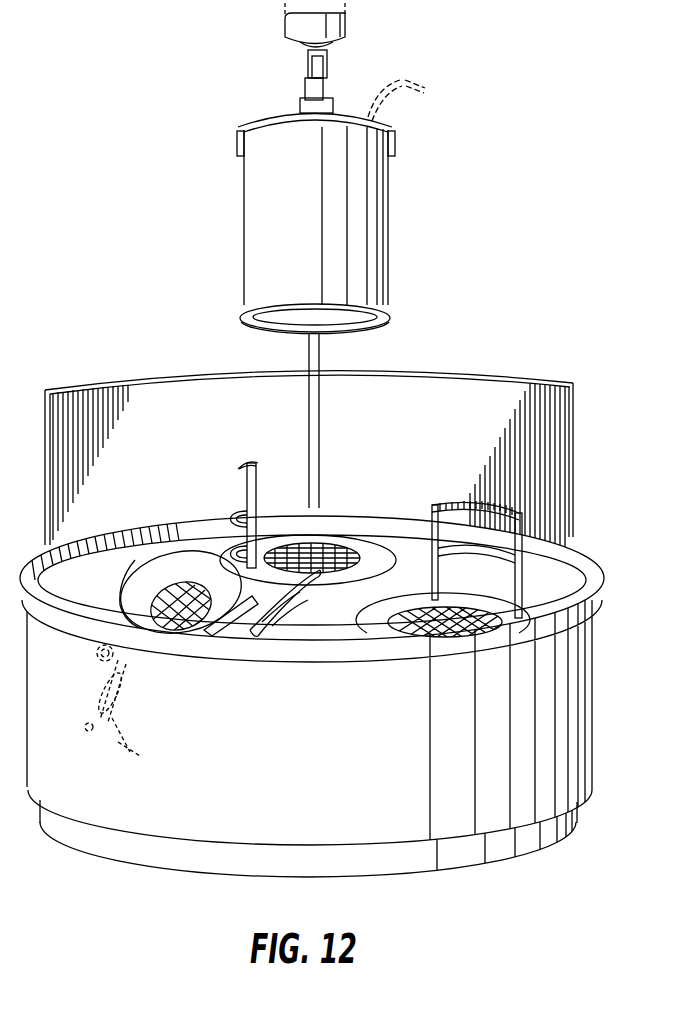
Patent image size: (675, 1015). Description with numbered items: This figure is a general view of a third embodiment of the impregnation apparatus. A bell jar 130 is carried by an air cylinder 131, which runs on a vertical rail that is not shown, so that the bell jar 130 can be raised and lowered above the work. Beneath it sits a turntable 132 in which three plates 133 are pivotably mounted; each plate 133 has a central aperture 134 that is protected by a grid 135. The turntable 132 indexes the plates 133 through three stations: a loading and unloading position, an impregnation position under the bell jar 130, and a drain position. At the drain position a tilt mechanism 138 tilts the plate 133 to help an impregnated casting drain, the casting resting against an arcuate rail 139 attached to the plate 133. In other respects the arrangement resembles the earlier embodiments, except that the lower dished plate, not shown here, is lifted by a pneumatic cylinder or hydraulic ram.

The bell jar 130 is at (375, 258).
The air cylinder 131 is at (290, 22).
The turntable 132 is at (586, 634).
The plate 133 is at (132, 575).
The central aperture 134 is at (182, 592).
The grid 135 is at (187, 632).
The tilt mechanism 138 is at (125, 707).
The arcuate rail 139 is at (244, 468).